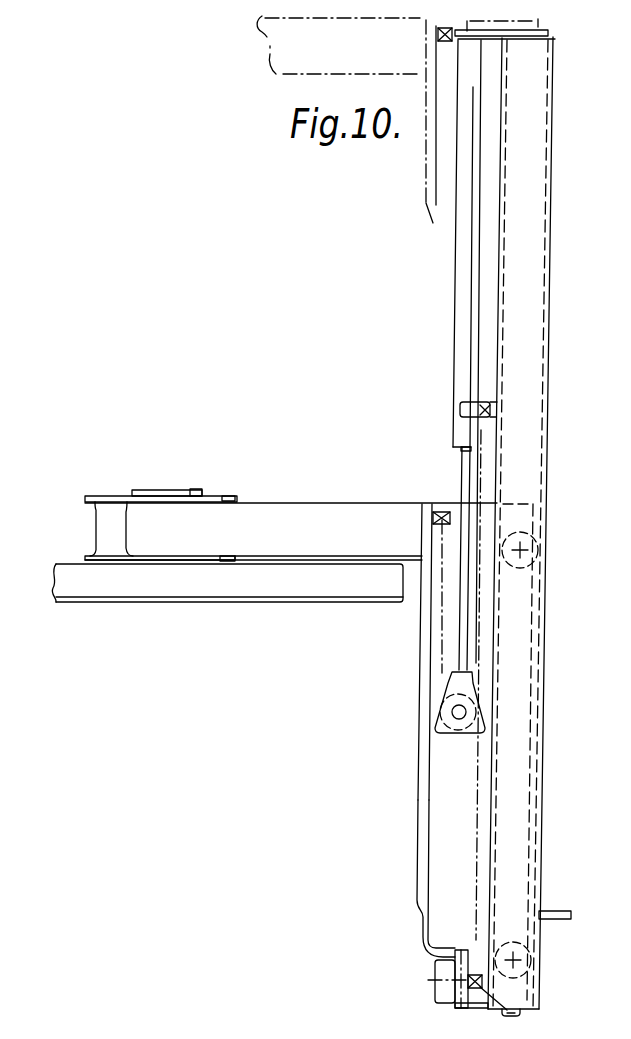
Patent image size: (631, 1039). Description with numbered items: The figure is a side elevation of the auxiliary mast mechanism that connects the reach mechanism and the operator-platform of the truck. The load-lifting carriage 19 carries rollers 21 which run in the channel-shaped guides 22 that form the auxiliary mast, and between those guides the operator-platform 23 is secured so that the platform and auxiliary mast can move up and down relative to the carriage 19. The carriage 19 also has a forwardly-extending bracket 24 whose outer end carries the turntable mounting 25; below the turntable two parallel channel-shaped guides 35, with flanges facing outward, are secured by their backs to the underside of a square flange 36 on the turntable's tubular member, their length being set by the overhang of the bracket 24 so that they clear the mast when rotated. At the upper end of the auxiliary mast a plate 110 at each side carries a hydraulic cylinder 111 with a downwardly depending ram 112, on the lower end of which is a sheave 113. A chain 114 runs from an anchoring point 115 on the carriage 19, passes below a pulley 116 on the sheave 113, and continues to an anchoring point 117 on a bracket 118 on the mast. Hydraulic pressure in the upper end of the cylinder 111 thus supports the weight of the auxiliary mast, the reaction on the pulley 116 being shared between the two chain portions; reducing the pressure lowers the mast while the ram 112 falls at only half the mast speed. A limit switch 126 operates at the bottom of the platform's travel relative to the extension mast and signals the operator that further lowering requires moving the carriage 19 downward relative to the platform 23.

The load-lifting carriage 19 is at (420, 808).
The rollers 21 is at (512, 534).
The channel-shaped guides 22 is at (513, 305).
The operator-platform 23 is at (547, 910).
The forwardly-extending bracket 24 is at (248, 515).
The turntable mounting 25 is at (210, 495).
The channel-shaped guides 35 is at (182, 587).
The square flange 36 is at (102, 555).
The plate 110 is at (456, 38).
The hydraulic cylinder 111 is at (462, 283).
The ram 112 is at (461, 458).
The sheave 113 is at (438, 727).
The chain 114 is at (442, 590).
The anchoring point 115 is at (440, 513).
The pulley 116 is at (450, 700).
The anchoring point 117 is at (479, 410).
The bracket 118 is at (489, 403).
The limit switch 126 is at (460, 977).